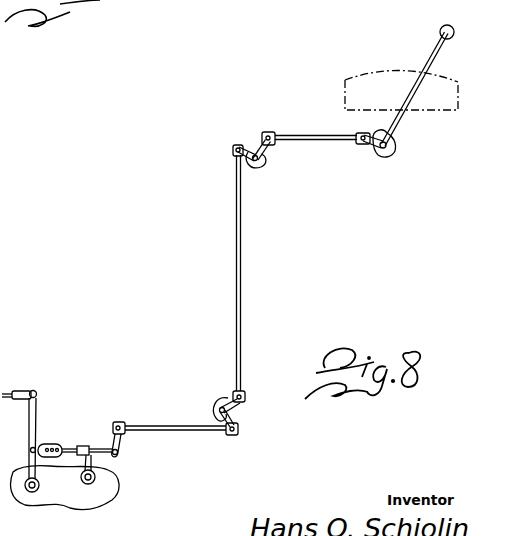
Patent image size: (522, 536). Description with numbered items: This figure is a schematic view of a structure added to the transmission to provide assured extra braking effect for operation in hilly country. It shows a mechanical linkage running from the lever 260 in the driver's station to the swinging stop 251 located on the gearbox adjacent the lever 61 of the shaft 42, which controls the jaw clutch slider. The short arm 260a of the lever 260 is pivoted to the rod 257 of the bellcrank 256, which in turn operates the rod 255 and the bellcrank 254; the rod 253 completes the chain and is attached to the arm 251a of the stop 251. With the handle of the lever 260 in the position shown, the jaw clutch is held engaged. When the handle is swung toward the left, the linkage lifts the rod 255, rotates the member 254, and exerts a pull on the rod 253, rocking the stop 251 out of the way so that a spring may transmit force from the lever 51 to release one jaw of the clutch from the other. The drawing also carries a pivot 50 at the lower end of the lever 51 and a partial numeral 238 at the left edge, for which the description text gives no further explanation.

The lever 260 is at (431, 50).
The short arm 260a is at (380, 151).
The rod 257 is at (307, 136).
The bellcrank 256 is at (245, 160).
The rod 255 is at (242, 357).
The bellcrank 254 is at (231, 417).
The rod 253 is at (181, 427).
The arm 251a is at (113, 446).
The swinging stop 251 is at (95, 449).
The lever 61 is at (98, 456).
The shaft 42 is at (86, 486).
The lever 51 is at (38, 405).
The pivot 50 is at (32, 494).
The element 238 is at (16, 223).